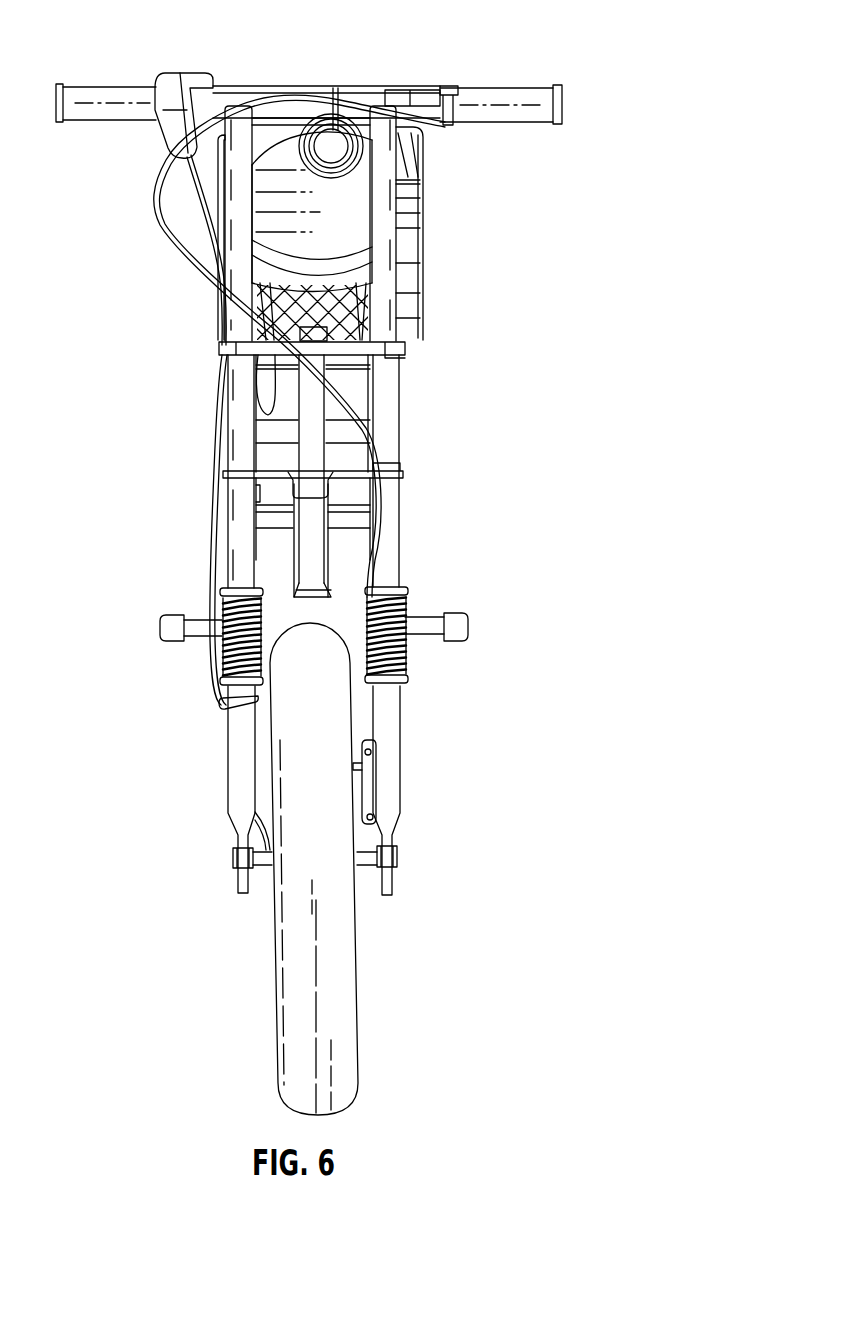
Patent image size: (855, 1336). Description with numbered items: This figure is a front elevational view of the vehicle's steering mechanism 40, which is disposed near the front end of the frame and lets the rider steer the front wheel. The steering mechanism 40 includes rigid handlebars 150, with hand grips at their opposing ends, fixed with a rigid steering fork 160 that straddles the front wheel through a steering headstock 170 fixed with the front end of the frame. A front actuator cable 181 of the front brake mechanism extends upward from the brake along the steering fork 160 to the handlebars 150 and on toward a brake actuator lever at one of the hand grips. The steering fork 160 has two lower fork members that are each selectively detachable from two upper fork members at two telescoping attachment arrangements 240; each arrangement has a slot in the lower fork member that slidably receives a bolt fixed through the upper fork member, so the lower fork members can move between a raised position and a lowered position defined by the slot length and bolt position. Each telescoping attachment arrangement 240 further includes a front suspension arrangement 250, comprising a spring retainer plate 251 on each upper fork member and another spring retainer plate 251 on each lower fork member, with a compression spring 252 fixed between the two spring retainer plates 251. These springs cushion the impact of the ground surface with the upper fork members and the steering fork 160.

The handlebars 150 is at (228, 93).
The front actuator cable 181 is at (156, 196).
The steering mechanism 40 is at (428, 328).
The steering fork 160 is at (237, 377).
The steering headstock 170 is at (322, 557).
The spring retainer plate 251 is at (222, 592).
The compression spring 252 is at (224, 660).
The telescoping attachment arrangement 240 is at (190, 617).
The front suspension arrangement 250 is at (437, 607).